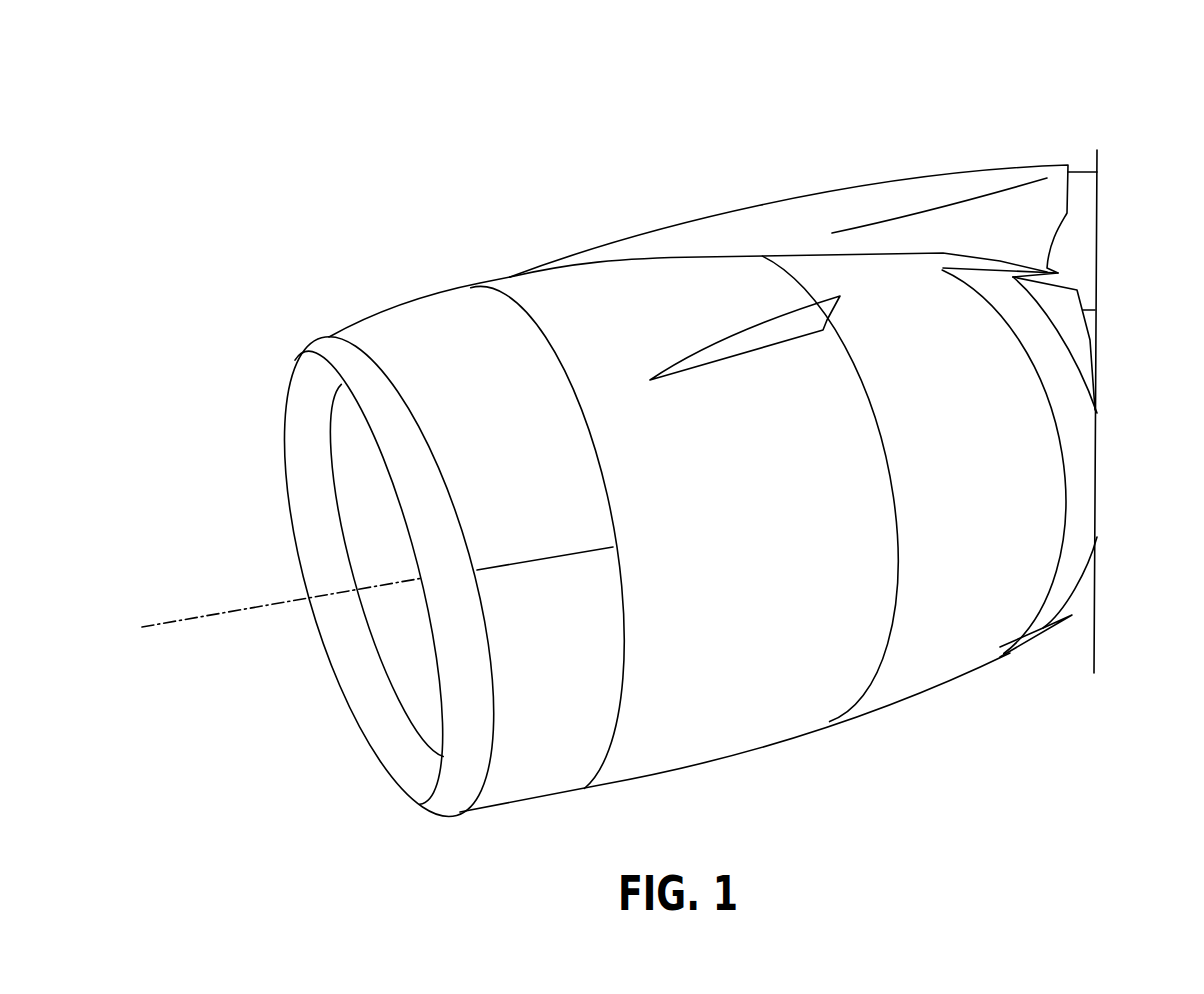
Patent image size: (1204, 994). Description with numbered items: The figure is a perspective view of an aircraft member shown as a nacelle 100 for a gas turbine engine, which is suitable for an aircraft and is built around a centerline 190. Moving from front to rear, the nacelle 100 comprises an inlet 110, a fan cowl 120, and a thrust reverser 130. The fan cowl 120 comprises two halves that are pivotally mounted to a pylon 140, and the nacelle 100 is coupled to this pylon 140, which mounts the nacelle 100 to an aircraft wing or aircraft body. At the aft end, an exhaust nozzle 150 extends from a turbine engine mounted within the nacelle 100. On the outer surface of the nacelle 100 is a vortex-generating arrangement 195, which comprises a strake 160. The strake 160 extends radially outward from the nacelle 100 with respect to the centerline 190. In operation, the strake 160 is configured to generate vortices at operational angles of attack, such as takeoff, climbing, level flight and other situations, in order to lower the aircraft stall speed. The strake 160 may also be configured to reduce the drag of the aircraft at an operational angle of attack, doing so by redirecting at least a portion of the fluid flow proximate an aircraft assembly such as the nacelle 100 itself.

The nacelle 100 is at (400, 117).
The inlet 110 is at (403, 323).
The fan cowl 120 is at (728, 702).
The thrust reverser 130 is at (940, 627).
The pylon 140 is at (842, 207).
The exhaust nozzle 150 is at (1083, 543).
The strake 160 is at (793, 330).
The centerline 190 is at (227, 613).
The vortex-generating arrangement 195 is at (709, 278).